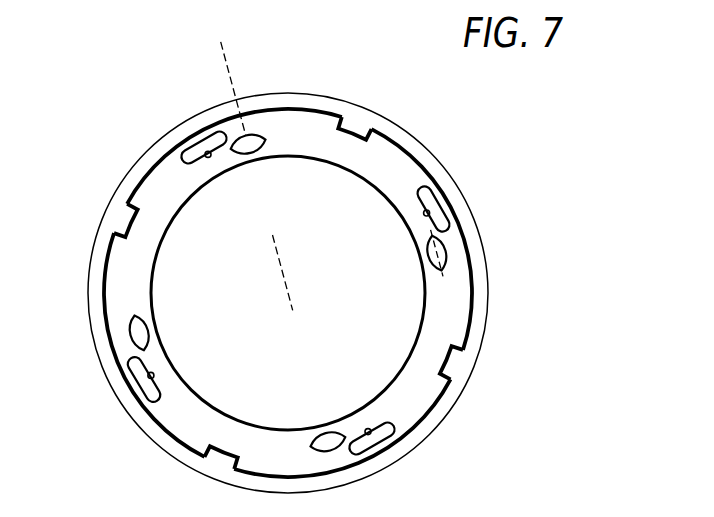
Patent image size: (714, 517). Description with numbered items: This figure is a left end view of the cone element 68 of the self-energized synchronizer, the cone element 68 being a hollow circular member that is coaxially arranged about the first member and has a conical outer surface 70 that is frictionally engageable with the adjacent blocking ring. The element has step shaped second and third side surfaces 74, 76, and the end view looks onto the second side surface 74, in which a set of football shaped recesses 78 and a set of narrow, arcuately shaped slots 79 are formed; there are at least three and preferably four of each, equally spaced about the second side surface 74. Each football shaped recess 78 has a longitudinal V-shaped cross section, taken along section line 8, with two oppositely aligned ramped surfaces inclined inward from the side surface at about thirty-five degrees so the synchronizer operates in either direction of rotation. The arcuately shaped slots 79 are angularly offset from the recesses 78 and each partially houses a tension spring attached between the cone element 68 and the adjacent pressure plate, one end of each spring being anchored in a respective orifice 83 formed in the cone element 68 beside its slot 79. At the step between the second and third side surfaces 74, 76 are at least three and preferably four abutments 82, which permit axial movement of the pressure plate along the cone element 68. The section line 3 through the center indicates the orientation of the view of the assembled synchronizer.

The cone element 68 is at (522, 188).
The conical outer surface 70 is at (487, 264).
The second side surface 74 is at (421, 406).
The third side surface 76 is at (472, 342).
The football shaped recesses 78 is at (265, 141).
The arcuately shaped slots 79 is at (198, 138).
The abutments 82 is at (349, 122).
The orifice 83 is at (209, 158).
The section line 3- 3 is at (195, 58).
The section line 8- 8 is at (440, 227).